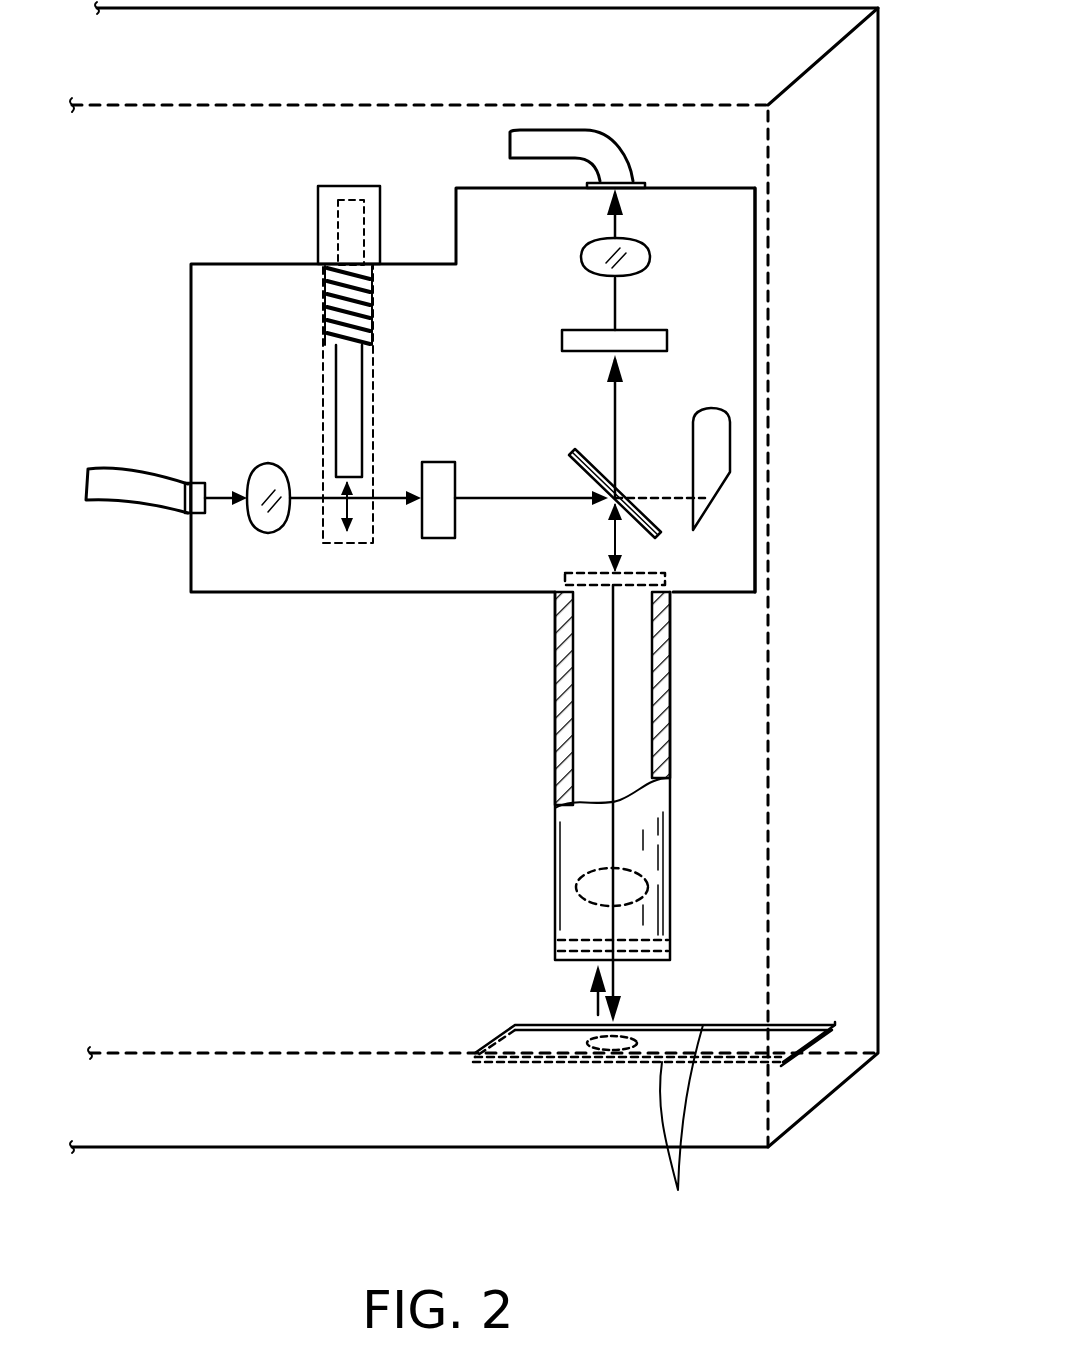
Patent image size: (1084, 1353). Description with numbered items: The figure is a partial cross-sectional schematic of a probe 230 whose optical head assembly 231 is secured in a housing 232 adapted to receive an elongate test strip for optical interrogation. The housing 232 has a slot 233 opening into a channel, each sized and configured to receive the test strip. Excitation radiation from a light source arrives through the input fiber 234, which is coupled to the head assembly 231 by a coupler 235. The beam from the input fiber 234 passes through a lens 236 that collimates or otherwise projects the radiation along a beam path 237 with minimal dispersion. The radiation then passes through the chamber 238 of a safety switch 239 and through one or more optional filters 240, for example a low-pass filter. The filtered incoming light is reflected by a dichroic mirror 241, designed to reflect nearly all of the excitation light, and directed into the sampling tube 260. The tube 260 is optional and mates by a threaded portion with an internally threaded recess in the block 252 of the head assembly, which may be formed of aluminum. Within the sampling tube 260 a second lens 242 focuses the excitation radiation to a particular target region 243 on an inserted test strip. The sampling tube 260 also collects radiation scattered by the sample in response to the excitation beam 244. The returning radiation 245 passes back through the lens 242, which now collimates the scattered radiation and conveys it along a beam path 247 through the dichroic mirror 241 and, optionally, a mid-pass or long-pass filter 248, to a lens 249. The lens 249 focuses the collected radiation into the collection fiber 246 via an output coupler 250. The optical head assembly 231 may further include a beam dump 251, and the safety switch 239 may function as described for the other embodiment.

The probe 230 is at (432, 570).
The optical head assembly 231 is at (213, 246).
The housing 232 is at (825, 748).
The slot 233 is at (830, 1045).
The input fiber 234 is at (130, 495).
The coupler 235 is at (195, 518).
The lens 236 is at (265, 533).
The beam path 237 is at (215, 490).
The chamber 238 is at (333, 526).
The safety switch 239 is at (400, 235).
The filter 240 is at (445, 520).
The dichroic mirror 241 is at (648, 540).
The second lens 242 is at (645, 880).
The target region 243 is at (588, 1046).
The excitation beam 244 is at (620, 1000).
The returning radiation 245 is at (590, 1004).
The collection fiber 246 is at (550, 150).
The beam path 247 is at (614, 402).
The filter 248 is at (650, 353).
The lens 249 is at (655, 256).
The output coupler 250 is at (637, 180).
The beam dump 251 is at (710, 471).
The block 252 is at (735, 556).
The sampling tube 260 is at (650, 800).